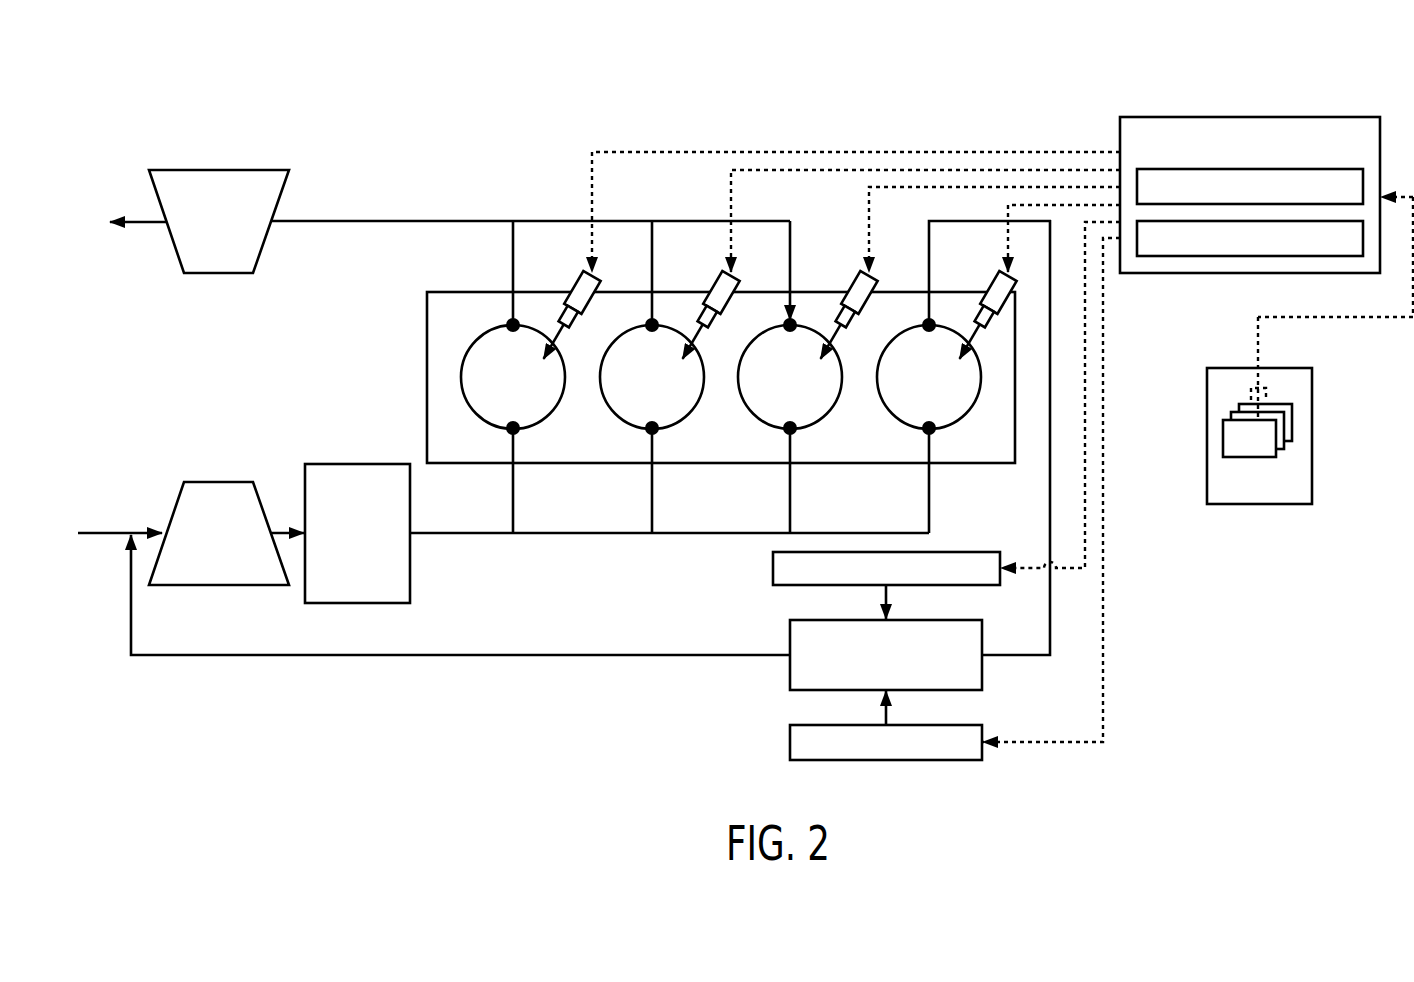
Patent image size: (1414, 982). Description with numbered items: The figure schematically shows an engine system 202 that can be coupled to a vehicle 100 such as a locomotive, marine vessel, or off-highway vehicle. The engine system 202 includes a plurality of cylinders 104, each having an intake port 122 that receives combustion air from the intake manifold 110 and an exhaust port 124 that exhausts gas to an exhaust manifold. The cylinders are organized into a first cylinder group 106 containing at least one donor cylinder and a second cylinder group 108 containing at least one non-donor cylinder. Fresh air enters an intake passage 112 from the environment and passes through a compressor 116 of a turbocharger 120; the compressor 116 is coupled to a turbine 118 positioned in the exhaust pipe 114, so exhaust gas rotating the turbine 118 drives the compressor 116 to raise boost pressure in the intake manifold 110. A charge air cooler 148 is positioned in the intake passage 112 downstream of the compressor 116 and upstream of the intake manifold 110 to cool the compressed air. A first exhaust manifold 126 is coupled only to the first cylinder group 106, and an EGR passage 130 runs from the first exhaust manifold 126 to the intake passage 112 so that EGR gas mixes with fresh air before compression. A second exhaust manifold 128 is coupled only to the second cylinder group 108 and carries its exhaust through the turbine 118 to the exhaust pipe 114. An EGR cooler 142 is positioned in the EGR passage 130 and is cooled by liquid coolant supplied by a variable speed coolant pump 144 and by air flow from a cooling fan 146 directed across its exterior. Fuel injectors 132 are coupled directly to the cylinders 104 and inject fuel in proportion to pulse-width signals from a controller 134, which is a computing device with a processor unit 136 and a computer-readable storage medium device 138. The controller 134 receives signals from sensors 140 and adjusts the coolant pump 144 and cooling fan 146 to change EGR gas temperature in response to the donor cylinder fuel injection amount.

The vehicle 100 is at (164, 80).
The cylinders 104 is at (498, 389).
The first cylinder group 106 is at (1121, 324).
The second cylinder group 108 is at (417, 351).
The intake manifold 110 is at (913, 531).
The intake passage 112 is at (124, 536).
The exhaust pipe 114 is at (148, 224).
The compressor 116 is at (203, 545).
The turbine 118 is at (203, 234).
The turbocharger 120 is at (261, 168).
The intake port 122 is at (508, 433).
The exhaust port 124 is at (508, 320).
The first exhaust manifold 126 is at (956, 221).
The second exhaust manifold 128 is at (499, 221).
The EGR passage 130 is at (1050, 515).
The fuel injectors 132 is at (586, 277).
The controller 134 is at (1334, 153).
The processor unit 136 is at (1328, 200).
The computer-readable storage medium device 138 is at (1353, 252).
The sensors 140 is at (1243, 497).
The EGR cooler 142 is at (968, 668).
The coolant pump 144 is at (980, 581).
The cooling fan 146 is at (969, 755).
The charge air cooler 148 is at (342, 590).
The engine system 202 is at (707, 455).